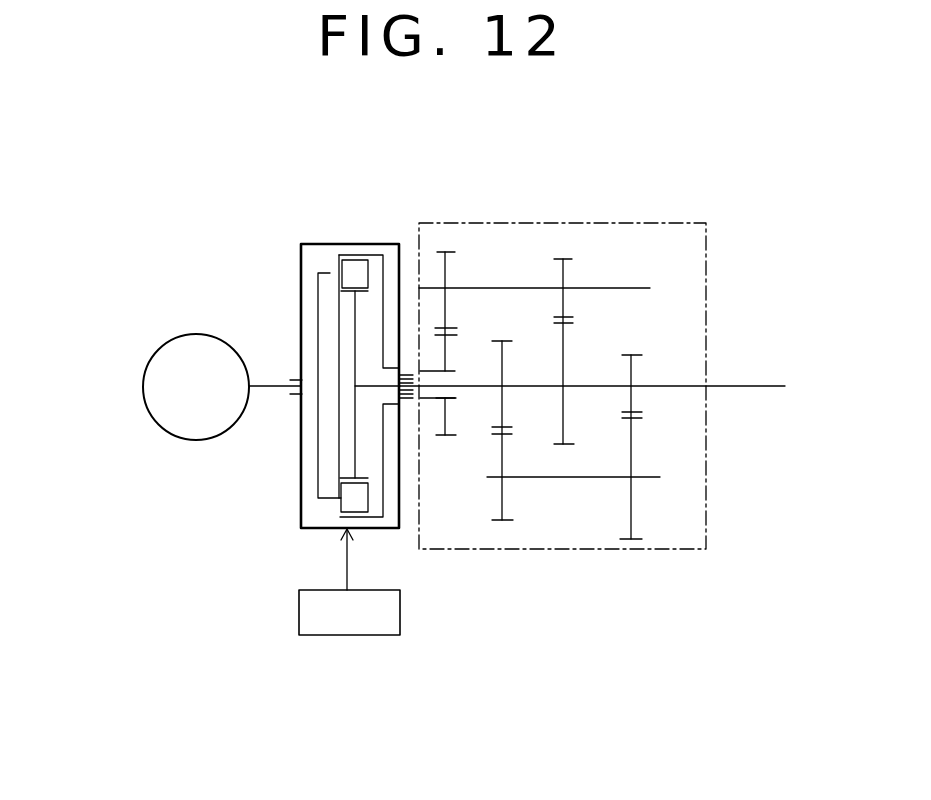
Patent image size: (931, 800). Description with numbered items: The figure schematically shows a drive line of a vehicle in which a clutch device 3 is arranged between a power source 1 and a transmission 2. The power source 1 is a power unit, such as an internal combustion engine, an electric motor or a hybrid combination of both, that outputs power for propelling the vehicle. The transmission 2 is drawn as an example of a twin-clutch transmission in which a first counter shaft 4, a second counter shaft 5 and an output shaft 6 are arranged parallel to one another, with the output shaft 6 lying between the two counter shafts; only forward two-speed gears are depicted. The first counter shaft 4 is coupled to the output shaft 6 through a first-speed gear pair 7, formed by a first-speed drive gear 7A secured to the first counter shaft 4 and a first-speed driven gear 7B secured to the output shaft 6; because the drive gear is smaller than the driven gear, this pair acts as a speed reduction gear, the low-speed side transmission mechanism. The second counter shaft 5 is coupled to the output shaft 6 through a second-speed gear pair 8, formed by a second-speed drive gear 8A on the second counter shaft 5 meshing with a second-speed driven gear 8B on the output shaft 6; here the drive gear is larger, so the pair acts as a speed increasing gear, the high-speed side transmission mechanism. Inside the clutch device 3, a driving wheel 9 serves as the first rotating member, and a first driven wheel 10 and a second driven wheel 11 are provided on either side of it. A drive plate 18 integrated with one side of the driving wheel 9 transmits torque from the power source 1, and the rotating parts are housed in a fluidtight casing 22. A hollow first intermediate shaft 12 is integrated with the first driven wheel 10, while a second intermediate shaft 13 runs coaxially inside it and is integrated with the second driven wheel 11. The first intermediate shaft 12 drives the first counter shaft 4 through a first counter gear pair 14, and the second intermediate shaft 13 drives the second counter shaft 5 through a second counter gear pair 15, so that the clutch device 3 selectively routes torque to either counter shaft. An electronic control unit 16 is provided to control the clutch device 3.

The power source 1 is at (165, 340).
The transmission 2 is at (673, 222).
The clutch device 3 is at (325, 229).
The first counter shaft 4 is at (640, 288).
The second counter shaft 5 is at (650, 477).
The output shaft 6 is at (740, 384).
The first-speed gear pair 7 is at (564, 255).
The first-speed drive gear 7A is at (567, 265).
The first-speed driven gear 7B is at (558, 326).
The second-speed gear pair 8 is at (650, 346).
The second-speed drive gear 8A is at (633, 512).
The second-speed driven gear 8B is at (636, 412).
The driving wheel 9 is at (338, 506).
The first driven wheel 10 is at (373, 256).
The second driven wheel 11 is at (350, 479).
The first intermediate shaft 12 is at (450, 371).
The second intermediate shaft 13 is at (515, 386).
The first counter gear pair 14 is at (450, 248).
The second counter gear pair 15 is at (505, 527).
The electronic control unit 16 is at (357, 637).
The drive plate 18 is at (316, 298).
The casing 22 is at (300, 244).